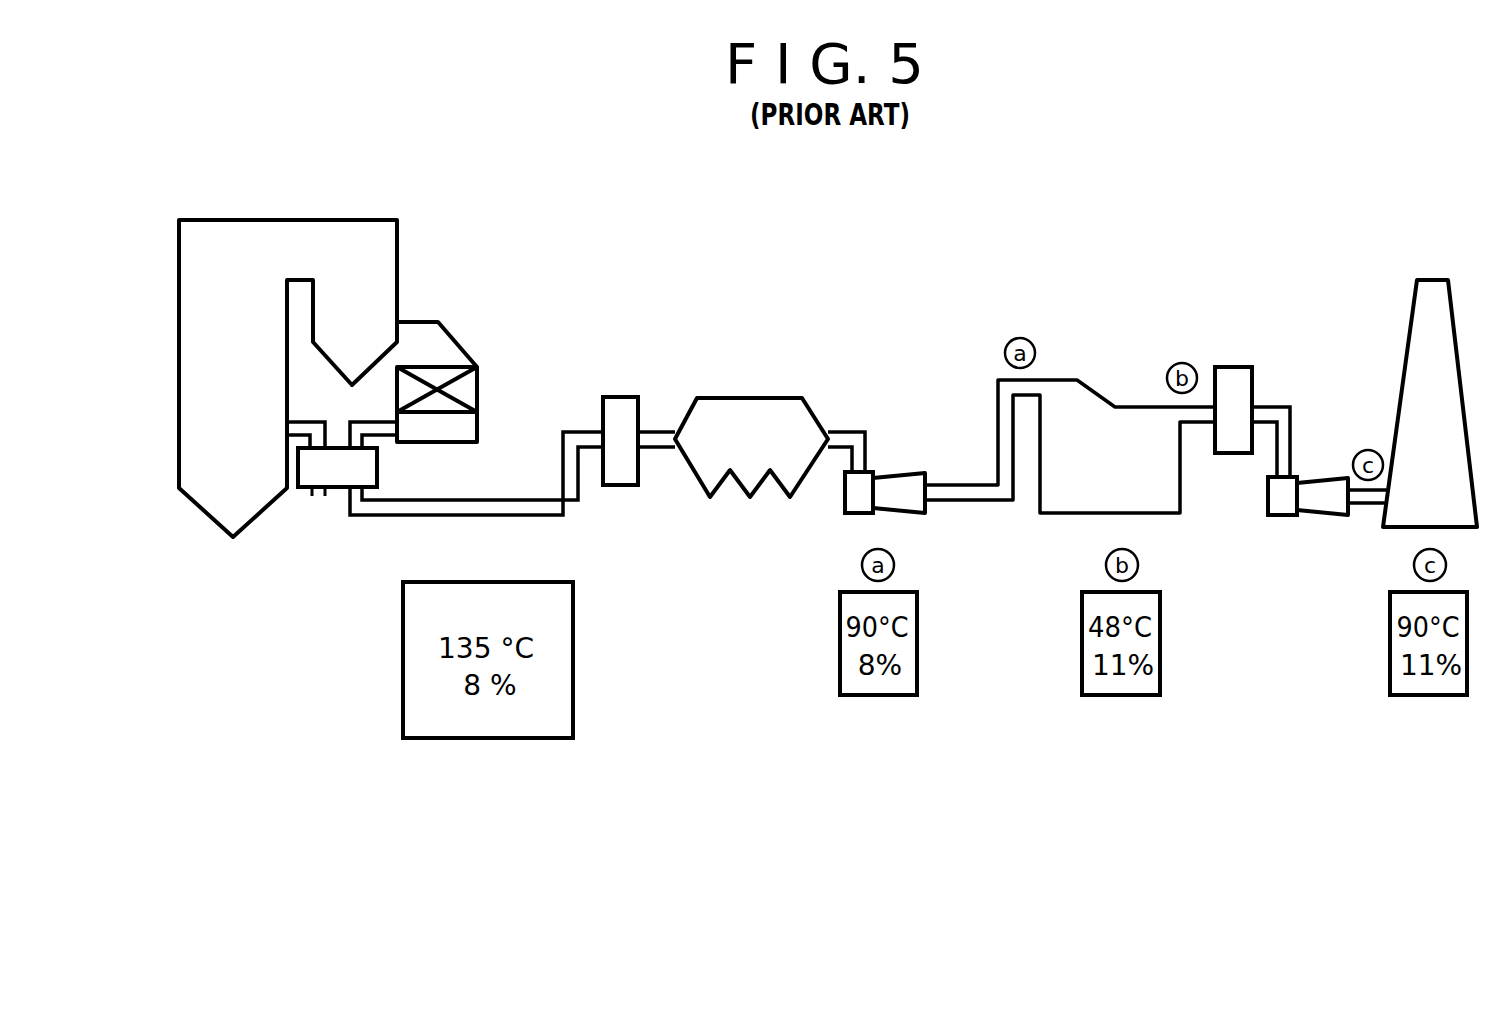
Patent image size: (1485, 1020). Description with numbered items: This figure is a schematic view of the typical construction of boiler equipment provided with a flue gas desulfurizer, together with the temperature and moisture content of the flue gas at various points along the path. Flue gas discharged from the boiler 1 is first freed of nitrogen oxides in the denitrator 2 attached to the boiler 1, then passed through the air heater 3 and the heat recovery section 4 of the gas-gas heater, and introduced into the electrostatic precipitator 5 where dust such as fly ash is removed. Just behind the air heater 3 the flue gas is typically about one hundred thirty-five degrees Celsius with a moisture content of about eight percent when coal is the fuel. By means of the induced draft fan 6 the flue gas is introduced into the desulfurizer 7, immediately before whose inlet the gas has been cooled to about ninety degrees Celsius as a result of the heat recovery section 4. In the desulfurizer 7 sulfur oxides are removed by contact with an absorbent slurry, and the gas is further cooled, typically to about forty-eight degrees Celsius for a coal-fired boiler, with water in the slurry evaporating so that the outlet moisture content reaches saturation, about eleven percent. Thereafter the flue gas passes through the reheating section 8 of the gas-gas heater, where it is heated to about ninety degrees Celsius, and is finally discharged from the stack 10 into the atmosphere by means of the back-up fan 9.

The boiler 1 is at (300, 220).
The denitrator 2 is at (460, 345).
The air heater 3 is at (377, 468).
The heat recovery section 4 is at (625, 397).
The electrostatic precipitator 5 is at (750, 398).
The induced draft fan 6 is at (905, 473).
The desulfurizer 7 is at (1103, 390).
The reheating section 8 is at (1233, 367).
The back-up fan 9 is at (1330, 477).
The stack 10 is at (1408, 305).